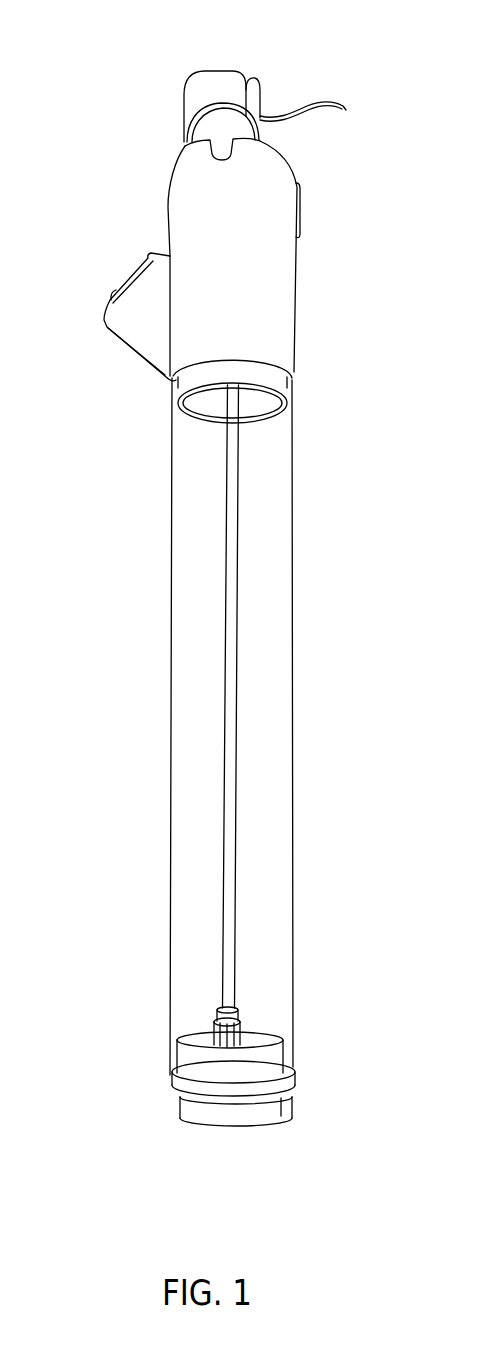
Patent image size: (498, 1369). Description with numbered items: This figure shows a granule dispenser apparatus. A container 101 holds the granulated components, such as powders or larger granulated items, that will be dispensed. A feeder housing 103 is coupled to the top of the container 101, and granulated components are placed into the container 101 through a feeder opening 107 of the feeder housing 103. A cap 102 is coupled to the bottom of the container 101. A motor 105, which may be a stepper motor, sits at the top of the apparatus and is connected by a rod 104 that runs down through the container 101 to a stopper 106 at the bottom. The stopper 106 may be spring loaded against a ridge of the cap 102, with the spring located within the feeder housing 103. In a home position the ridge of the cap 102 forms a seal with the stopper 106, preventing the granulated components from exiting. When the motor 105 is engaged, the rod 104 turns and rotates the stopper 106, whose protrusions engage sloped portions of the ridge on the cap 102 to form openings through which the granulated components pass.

The container 101 is at (293, 583).
The cap 102 is at (250, 1124).
The feeder housing 103 is at (296, 289).
The rod 104 is at (225, 795).
The motor 105 is at (207, 70).
The stopper 106 is at (242, 1011).
The feeder opening 107 is at (128, 277).